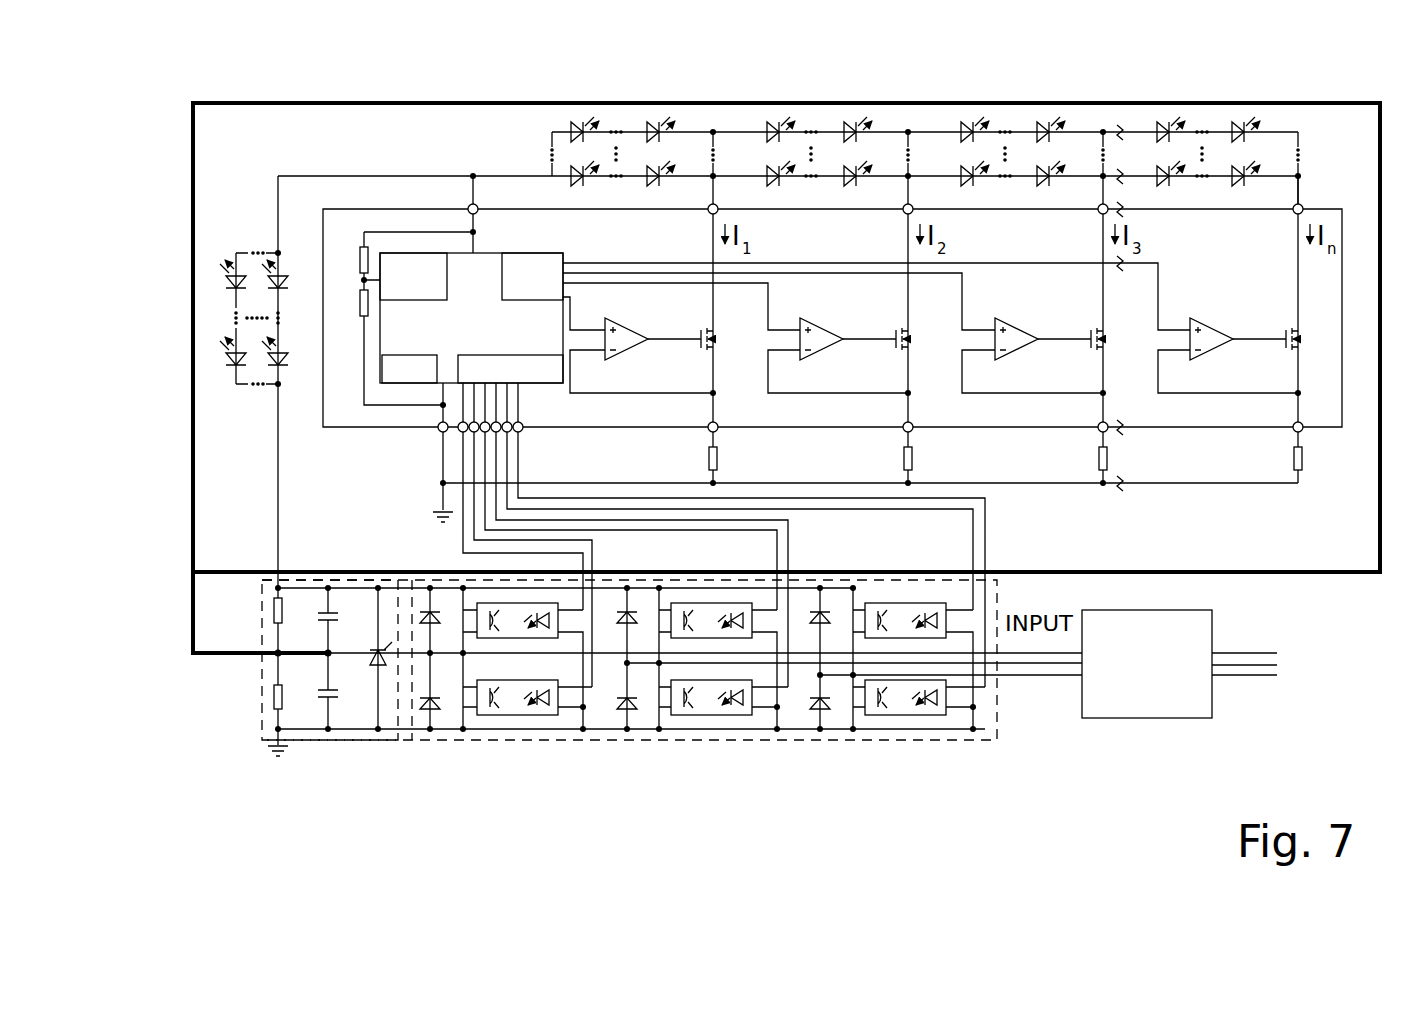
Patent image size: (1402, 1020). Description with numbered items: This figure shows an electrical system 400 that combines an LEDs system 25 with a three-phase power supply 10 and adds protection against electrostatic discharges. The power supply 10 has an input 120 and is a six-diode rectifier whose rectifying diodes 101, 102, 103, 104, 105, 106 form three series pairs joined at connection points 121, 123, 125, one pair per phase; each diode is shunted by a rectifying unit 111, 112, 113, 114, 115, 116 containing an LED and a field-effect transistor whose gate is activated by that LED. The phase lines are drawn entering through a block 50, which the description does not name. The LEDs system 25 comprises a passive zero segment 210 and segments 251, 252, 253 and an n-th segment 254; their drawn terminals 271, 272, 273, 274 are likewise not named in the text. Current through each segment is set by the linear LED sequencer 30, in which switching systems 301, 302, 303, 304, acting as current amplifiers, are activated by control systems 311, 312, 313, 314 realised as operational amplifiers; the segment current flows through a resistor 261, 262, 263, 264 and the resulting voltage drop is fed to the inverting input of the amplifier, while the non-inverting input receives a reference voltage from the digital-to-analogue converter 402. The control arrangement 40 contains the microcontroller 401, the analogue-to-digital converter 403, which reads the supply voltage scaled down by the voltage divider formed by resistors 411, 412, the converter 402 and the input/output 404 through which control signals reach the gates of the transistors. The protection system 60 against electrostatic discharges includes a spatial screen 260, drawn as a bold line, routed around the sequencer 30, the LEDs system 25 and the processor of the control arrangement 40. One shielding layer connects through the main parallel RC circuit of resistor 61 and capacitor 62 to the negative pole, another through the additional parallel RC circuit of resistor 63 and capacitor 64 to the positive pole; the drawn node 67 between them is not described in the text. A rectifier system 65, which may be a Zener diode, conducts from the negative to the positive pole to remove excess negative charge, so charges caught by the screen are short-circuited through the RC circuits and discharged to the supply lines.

The electrical system 400 is at (188, 98).
The analogue-to-digital converter 403 is at (422, 263).
The digital-to-analogue converter 402 is at (522, 263).
The LEDs system 25 is at (889, 123).
The first segment of LEDs 251 is at (618, 142).
The first string terminal 271 is at (707, 170).
The second segment of LEDs 252 is at (800, 142).
The second string terminal 272 is at (900, 170).
The third segment of LEDs 253 is at (995, 142).
The third string terminal 273 is at (1095, 170).
The n-th segment of LEDs 254 is at (1192, 142).
The fourth string terminal 274 is at (1290, 170).
The LED sequencer 30 is at (1315, 185).
The resistor 411 is at (364, 258).
The resistor 412 is at (364, 300).
The passive zero segment 210 is at (242, 259).
The control system 311 is at (628, 340).
The switching system 301 is at (702, 338).
The control system 312 is at (823, 340).
The switching system 302 is at (897, 338).
The control system 313 is at (1018, 340).
The switching system 303 is at (1092, 338).
The control system 314 is at (1213, 340).
The switching system 304 is at (1287, 338).
The control arrangement 40 is at (340, 286).
The microcontroller 401 is at (420, 372).
The input/output 404 is at (470, 368).
The resistor 261 is at (798, 473).
The resistor 262 is at (993, 473).
The resistor 263 is at (1188, 473).
The resistor 264 is at (1378, 473).
The spatial screen 260 is at (193, 561).
The resistor 63 is at (276, 612).
The capacitor 64 is at (322, 618).
The midpoint node 67 is at (280, 652).
The protection system 60 is at (262, 700).
The resistor 61 is at (278, 705).
The capacitor 62 is at (322, 693).
The rectifier system 65 is at (378, 663).
The rectifying diode 101 is at (430, 620).
The connection point 121 is at (392, 731).
The rectifying diode 102 is at (430, 705).
The rectifying unit 111 is at (515, 625).
The rectifying unit 112 is at (520, 705).
The rectifying diode 103 is at (627, 612).
The connection point 123 is at (582, 731).
The rectifying diode 104 is at (627, 705).
The rectifying unit 113 is at (710, 625).
The rectifying unit 114 is at (712, 705).
The rectifying diode 105 is at (820, 612).
The connection point 125 is at (776, 731).
The rectifying diode 106 is at (820, 705).
The rectifying unit 115 is at (905, 625).
The rectifying unit 116 is at (908, 705).
The three-phase power supply 10 is at (982, 795).
The input 120 is at (985, 690).
The mains input unit 50 is at (1117, 718).